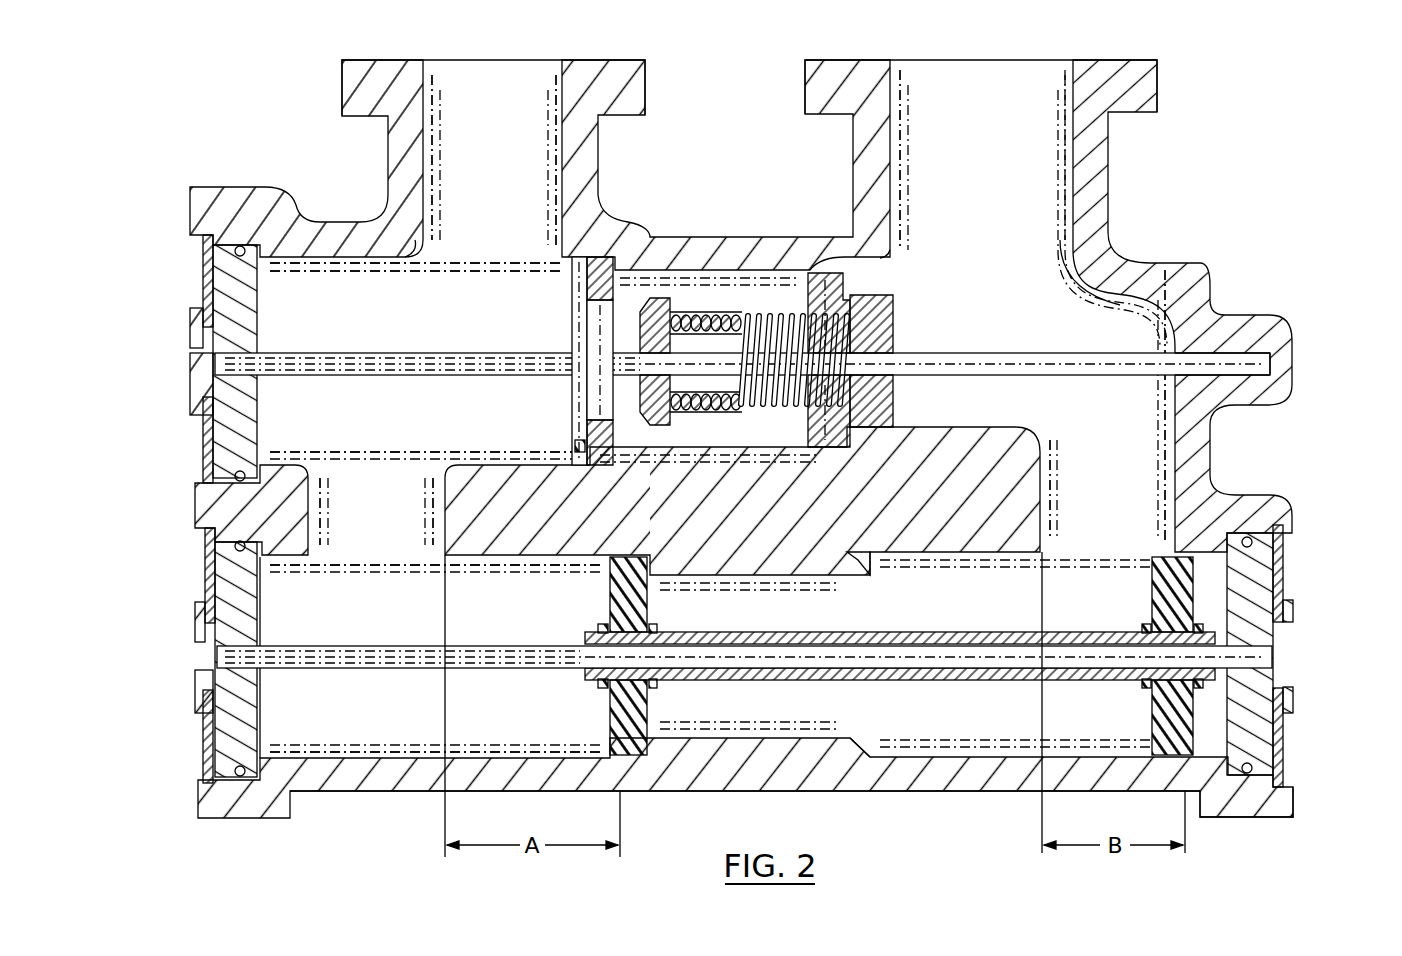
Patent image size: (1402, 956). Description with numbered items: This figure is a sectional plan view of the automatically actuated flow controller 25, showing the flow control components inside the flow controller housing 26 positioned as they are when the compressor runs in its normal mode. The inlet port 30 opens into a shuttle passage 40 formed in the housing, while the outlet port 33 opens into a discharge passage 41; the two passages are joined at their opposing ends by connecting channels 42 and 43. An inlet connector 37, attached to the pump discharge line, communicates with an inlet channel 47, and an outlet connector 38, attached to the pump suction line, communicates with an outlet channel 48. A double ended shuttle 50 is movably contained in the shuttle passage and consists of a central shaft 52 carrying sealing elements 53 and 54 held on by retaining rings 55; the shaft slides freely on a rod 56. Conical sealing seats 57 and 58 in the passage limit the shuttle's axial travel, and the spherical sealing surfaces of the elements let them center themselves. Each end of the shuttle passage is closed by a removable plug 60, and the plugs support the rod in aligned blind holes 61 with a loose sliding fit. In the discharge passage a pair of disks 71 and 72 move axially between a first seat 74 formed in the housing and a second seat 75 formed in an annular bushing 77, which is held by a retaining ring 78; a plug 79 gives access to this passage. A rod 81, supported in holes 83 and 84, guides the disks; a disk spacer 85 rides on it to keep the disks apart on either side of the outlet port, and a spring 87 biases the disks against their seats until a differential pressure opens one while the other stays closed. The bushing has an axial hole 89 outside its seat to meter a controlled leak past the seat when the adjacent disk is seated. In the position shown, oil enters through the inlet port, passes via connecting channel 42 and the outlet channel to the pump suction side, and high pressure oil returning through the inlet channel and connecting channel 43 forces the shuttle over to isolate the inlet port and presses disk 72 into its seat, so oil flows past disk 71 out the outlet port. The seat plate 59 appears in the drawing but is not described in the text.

The flow controller 25 is at (741, 439).
The flow controller housing 26 is at (1174, 138).
The inlet port 30 is at (755, 688).
The outlet port 33 is at (745, 312).
The inlet connector 37 is at (441, 60).
The outlet connector 38 is at (921, 58).
The shuttle passage 40 is at (435, 658).
The discharge passage 41 is at (717, 401).
The connecting channel 42 is at (1089, 490).
The connecting channel 43 is at (376, 511).
The inlet channel 47 is at (494, 160).
The outlet channel 48 is at (982, 160).
The double ended shuttle 50 is at (1142, 740).
The central shaft 52 is at (928, 790).
The sealing element 53 is at (600, 622).
The sealing element 54 is at (1279, 562).
The retaining ring 55 is at (603, 628).
The rod 56 is at (420, 668).
The sealing seat 57 is at (625, 575).
The sealing seat 58 is at (872, 560).
The seat plate 59 is at (586, 252).
The plug 60 is at (212, 740).
The blind hole 61 is at (212, 636).
The disk 71 is at (582, 320).
The disk 72 is at (898, 326).
The first seat 74 is at (858, 282).
The second seat 75 is at (590, 272).
The annular bushing 77 is at (595, 430).
The retaining ring 78 is at (580, 448).
The plug 79 is at (207, 262).
The rod 81 is at (282, 352).
The hole 83 is at (215, 362).
The hole 84 is at (1290, 346).
The disk spacer 85 is at (688, 300).
The spring 87 is at (725, 312).
The axial hole 89 is at (590, 447).